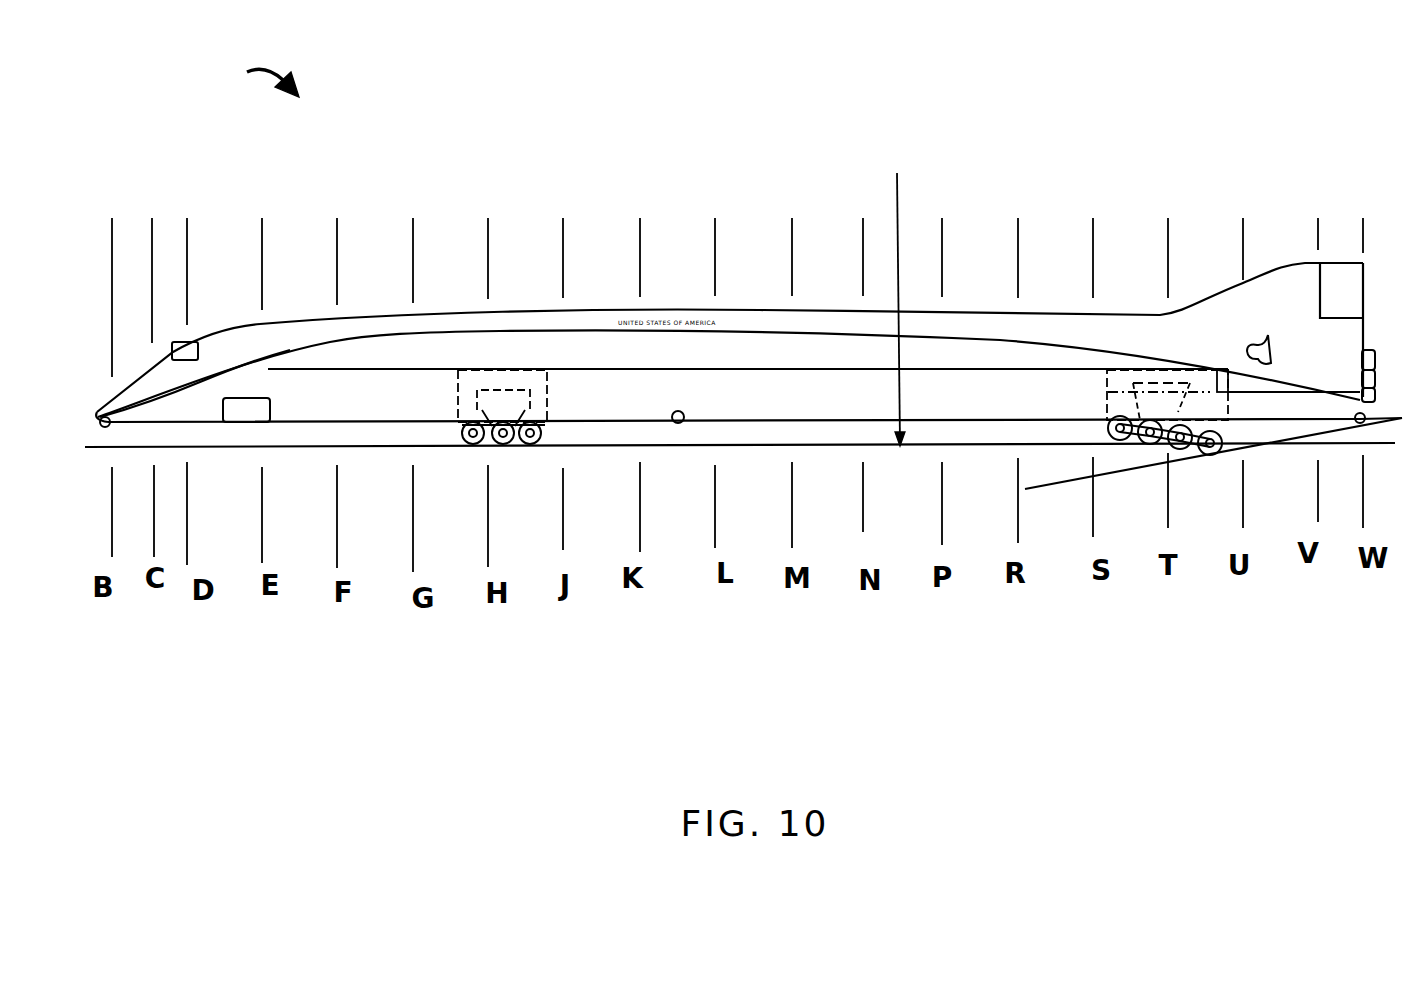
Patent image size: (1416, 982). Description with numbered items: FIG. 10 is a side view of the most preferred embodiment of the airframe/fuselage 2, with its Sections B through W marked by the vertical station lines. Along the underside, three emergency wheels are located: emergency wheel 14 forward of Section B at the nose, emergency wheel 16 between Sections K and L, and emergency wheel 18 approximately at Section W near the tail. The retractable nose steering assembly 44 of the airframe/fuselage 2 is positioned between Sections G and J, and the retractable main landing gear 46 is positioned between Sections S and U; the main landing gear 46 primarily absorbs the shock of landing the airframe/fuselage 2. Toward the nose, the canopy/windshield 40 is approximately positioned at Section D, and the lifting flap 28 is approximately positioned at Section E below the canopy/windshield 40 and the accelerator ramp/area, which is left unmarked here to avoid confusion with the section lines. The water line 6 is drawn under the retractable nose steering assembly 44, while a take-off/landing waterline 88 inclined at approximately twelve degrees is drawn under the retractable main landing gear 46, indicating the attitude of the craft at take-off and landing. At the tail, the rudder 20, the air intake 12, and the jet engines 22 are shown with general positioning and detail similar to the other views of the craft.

The airframe/fuselage 2 is at (256, 86).
The water line 6 is at (897, 289).
The air intake 12 is at (1270, 335).
The emergency wheel 14 is at (104, 432).
The emergency wheel 16 is at (677, 428).
The emergency wheel 18 is at (1359, 426).
The rudder 20 is at (1340, 280).
The jet engines 22 is at (1375, 347).
The lifting flap 28 is at (262, 398).
The canopy/windshield 40 is at (197, 342).
The retractable nose steering assembly 44 is at (505, 405).
The retractable main landing gear 46 is at (1147, 378).
The take-off/landing waterline 88 is at (1058, 486).